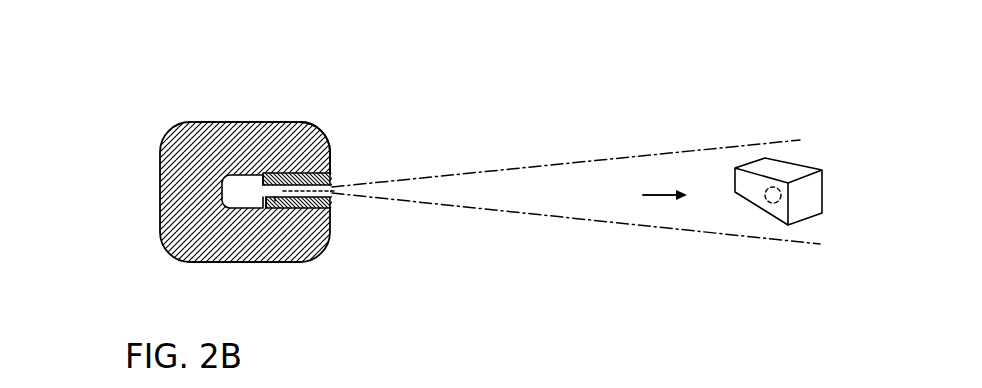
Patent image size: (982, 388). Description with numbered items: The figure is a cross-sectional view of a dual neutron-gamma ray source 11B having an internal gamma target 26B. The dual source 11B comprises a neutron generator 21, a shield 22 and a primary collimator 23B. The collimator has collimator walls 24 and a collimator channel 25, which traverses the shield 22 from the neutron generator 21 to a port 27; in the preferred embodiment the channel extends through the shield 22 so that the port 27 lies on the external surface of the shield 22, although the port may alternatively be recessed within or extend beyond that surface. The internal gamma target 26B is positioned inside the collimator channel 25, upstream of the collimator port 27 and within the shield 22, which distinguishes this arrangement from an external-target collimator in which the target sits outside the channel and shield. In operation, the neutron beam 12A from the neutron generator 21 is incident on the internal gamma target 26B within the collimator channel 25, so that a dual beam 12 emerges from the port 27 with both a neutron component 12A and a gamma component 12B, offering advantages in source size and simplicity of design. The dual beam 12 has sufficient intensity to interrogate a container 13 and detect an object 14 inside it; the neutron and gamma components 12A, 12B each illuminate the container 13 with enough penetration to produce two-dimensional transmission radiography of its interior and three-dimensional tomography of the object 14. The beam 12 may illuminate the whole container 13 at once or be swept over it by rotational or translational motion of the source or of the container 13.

The dual neutron-gamma ray source 11B is at (91, 57).
The shield 22 is at (177, 136).
The neutron generator 21 is at (237, 193).
The internal gamma target 26B is at (295, 183).
The primary collimator 23B is at (326, 152).
The port 27 is at (353, 170).
The collimator walls 24 is at (331, 200).
The collimator channel 25 is at (275, 208).
The dual beam 12 is at (706, 136).
The neutron beam 12A is at (611, 193).
The gamma component 12B is at (636, 193).
The container 13 is at (793, 171).
The object 14 is at (772, 206).